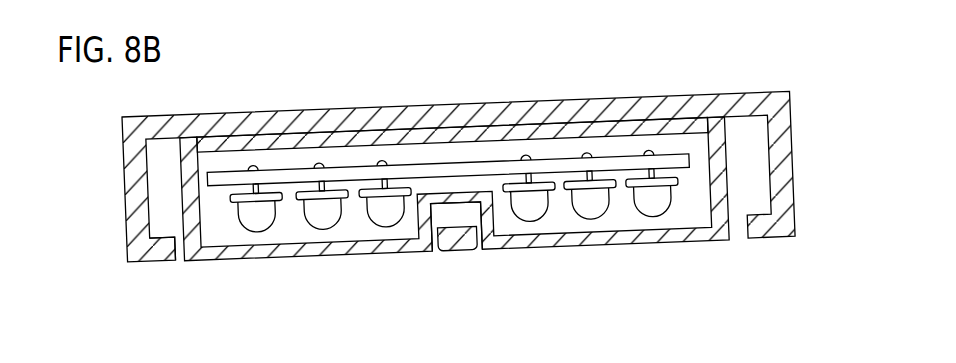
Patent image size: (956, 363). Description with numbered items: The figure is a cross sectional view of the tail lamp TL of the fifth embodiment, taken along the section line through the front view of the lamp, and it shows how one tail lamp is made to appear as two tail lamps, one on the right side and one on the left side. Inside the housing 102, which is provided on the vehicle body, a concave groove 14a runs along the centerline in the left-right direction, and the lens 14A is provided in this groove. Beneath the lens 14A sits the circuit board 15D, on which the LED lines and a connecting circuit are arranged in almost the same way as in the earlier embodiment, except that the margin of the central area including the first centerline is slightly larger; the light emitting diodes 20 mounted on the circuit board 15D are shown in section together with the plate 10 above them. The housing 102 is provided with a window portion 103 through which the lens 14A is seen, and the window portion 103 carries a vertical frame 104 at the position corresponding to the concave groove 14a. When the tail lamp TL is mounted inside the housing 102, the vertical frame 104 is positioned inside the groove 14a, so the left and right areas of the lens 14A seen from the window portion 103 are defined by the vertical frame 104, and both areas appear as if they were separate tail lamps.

The housing 102 is at (382, 118).
The window portion 103 is at (176, 241).
The lens 14A is at (660, 239).
The concave groove 14a is at (438, 252).
The vertical frame 104 is at (463, 252).
The light guide plate 10 is at (605, 131).
The circuit board 15D is at (230, 179).
The light emitting diodes 20 is at (260, 220).
The tail lamp TL is at (739, 148).